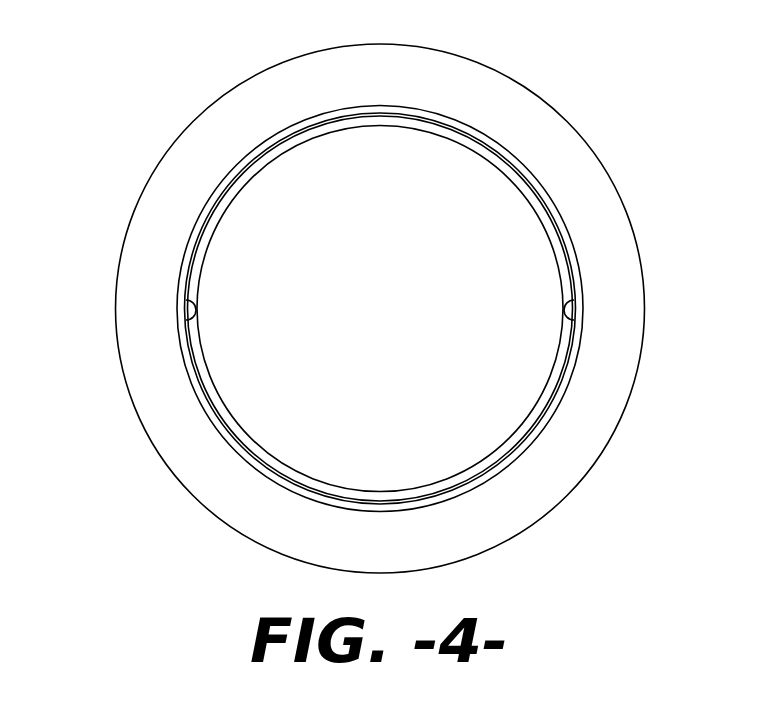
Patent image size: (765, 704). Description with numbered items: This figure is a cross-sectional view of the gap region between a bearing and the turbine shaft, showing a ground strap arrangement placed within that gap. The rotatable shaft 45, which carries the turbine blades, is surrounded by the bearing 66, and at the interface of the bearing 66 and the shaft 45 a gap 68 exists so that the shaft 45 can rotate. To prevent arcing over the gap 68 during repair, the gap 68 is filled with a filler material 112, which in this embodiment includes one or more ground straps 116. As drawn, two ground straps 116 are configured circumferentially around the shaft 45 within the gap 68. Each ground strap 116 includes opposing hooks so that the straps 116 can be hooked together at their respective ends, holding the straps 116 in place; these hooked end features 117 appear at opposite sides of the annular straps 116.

The rotatable shaft 45 is at (400, 325).
The bearing 66 is at (612, 160).
The gap 68 is at (590, 240).
The filler material 112 is at (516, 154).
The ground strap 116 is at (440, 115).
The tab / protrusion 117 is at (170, 311).